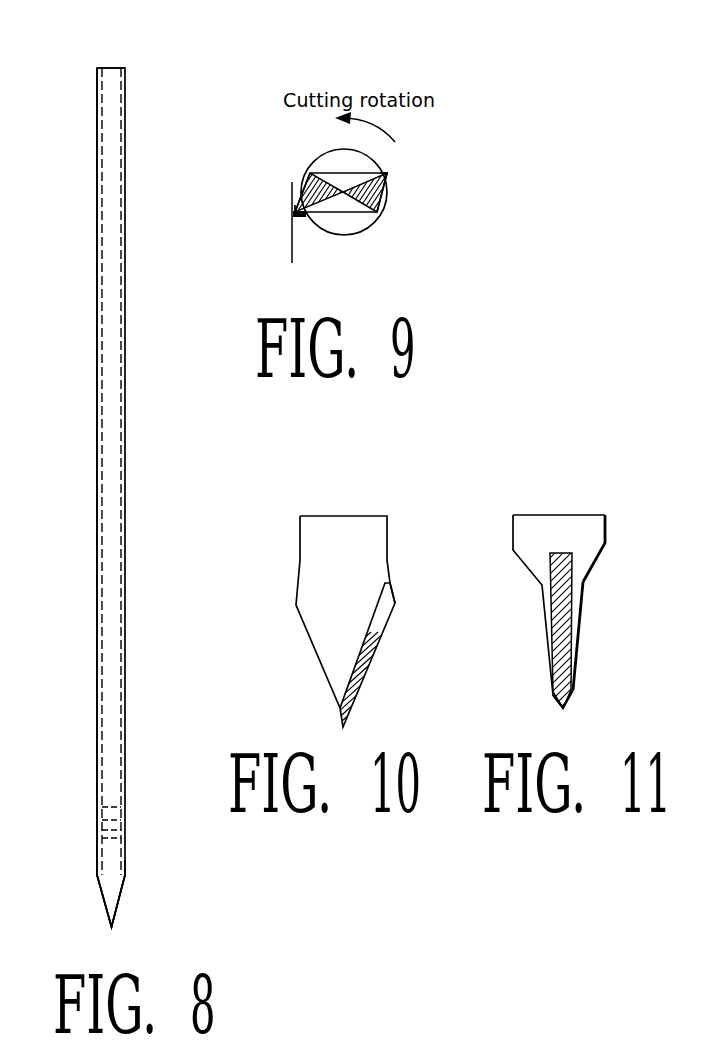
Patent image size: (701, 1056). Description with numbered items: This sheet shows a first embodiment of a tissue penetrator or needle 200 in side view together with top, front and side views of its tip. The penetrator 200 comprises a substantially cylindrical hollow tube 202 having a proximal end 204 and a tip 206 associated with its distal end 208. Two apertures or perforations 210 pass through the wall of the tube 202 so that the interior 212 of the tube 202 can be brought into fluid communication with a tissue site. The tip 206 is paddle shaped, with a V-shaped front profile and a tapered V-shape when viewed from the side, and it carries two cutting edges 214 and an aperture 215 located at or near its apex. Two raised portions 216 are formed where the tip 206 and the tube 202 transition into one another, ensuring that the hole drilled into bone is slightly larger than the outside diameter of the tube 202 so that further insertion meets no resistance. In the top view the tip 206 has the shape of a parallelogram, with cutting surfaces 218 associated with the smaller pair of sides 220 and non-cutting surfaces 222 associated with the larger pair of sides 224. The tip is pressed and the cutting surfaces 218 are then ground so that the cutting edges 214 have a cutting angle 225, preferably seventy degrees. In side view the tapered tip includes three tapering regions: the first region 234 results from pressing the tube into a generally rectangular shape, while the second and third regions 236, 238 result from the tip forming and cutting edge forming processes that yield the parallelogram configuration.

In FIG. 8, the tissue penetrator 200 is at (84, 110).
In FIG. 8, the hollow tube 202 is at (110, 340).
In FIG. 8, the proximal end 204 is at (110, 68).
In FIG. 8, the tip 206 is at (115, 893).
In FIG. 8, the distal end 208 is at (178, 856).
In FIG. 8, the apertures 210 is at (121, 828).
In FIG. 8, the interior 212 is at (113, 487).
In FIG. 9, the cutting edges 214 is at (390, 173).
In FIG. 9, the aperture 215 is at (392, 172).
In FIG. 10, the raised portions 216 is at (310, 598).
In FIG. 9, the cutting surfaces 218 is at (308, 182).
In FIG. 10, the cutting surfaces 218 is at (375, 662).
In FIG. 11, the cutting surfaces 218 is at (550, 652).
In FIG. 9, the smaller pair of sides 220 is at (302, 195).
In FIG. 9, the non-cutting surfaces 222 is at (338, 178).
In FIG. 9, the larger pair of sides 224 is at (352, 213).
In FIG. 9, the cutting angle 225 is at (294, 239).
In FIG. 11, the first tapering region 234 is at (593, 571).
In FIG. 11, the second tapering region 236 is at (583, 617).
In FIG. 11, the third tapering region 238 is at (570, 697).